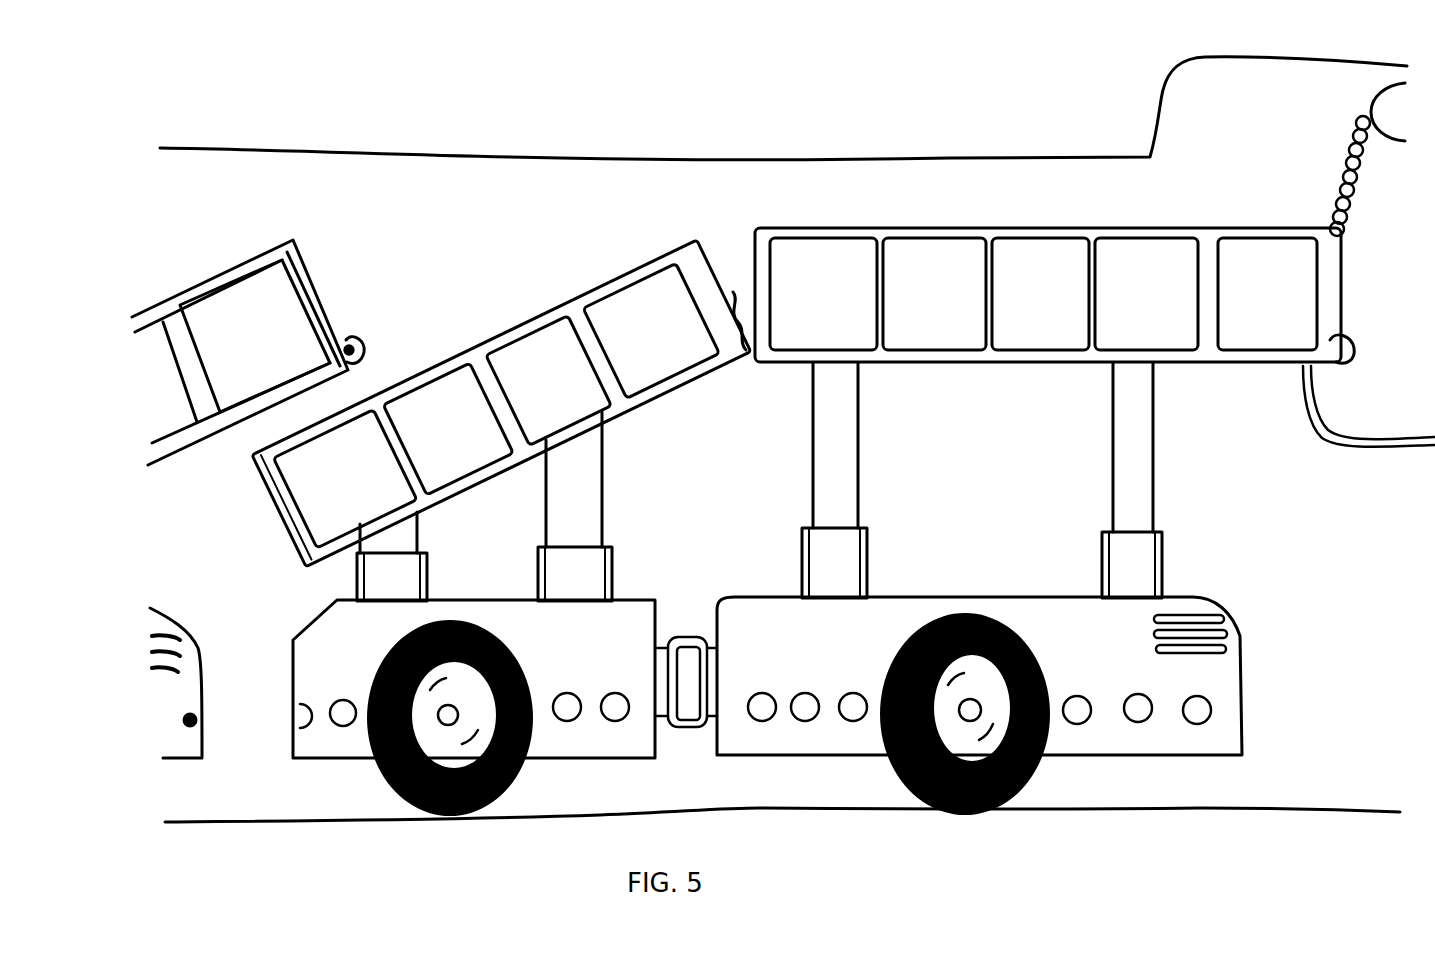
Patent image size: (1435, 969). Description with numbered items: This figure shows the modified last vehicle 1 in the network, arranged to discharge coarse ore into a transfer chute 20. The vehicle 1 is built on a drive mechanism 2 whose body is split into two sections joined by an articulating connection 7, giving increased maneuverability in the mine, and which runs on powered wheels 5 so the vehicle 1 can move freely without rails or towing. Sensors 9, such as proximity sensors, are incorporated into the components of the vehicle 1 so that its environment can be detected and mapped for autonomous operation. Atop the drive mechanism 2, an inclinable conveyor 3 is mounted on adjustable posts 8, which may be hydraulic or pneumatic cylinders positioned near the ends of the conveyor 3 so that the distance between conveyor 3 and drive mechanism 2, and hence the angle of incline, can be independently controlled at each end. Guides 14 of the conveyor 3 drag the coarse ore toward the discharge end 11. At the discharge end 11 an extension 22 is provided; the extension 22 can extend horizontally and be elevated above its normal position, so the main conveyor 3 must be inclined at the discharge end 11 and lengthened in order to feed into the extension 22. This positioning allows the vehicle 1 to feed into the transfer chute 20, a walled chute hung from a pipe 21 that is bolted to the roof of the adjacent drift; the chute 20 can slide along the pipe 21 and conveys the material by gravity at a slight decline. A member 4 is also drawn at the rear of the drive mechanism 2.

The vehicle 1 is at (1224, 586).
The drive mechanism 2 is at (658, 600).
The inclinable conveyor 3 is at (360, 344).
The towing handle 4 is at (196, 722).
The wheels 5 is at (508, 778).
The articulating connection 7 is at (690, 728).
The posts 8 is at (430, 580).
The sensors 9 is at (1212, 712).
The discharge end 11 is at (314, 256).
The guides 14 is at (348, 335).
The transfer chute 20 is at (1345, 448).
The pipe 21 is at (1360, 116).
The extension 22 is at (998, 370).